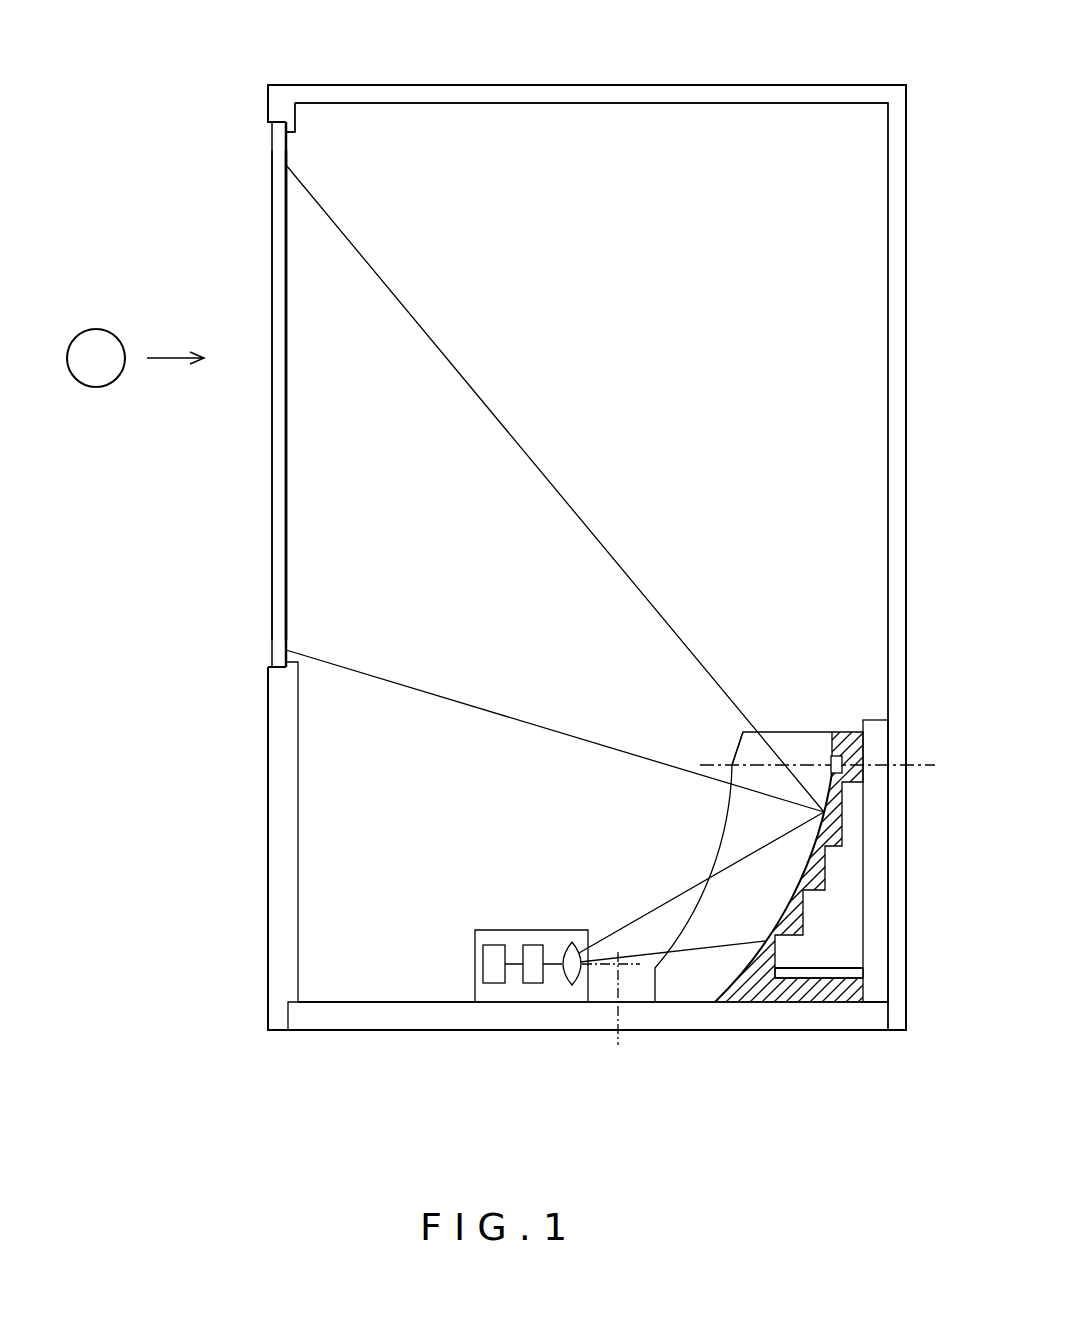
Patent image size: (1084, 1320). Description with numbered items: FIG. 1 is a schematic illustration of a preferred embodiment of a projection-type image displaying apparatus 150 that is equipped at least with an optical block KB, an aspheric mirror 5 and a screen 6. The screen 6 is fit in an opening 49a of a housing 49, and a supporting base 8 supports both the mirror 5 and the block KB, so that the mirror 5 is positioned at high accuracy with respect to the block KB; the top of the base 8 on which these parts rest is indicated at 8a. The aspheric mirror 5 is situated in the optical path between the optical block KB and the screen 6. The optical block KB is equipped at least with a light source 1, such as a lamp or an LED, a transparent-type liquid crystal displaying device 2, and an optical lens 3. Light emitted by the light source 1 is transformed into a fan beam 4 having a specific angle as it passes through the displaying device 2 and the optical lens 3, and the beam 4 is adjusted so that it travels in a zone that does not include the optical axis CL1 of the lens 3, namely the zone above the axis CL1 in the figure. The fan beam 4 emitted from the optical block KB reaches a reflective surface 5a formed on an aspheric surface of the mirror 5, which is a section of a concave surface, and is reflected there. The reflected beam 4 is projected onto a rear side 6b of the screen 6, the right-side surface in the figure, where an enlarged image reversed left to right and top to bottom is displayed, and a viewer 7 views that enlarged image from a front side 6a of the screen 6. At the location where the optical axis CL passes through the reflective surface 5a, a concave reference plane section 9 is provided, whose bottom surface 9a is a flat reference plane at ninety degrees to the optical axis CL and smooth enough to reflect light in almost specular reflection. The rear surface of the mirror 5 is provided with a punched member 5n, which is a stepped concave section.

The projection-type image displaying apparatus 150 is at (806, 27).
The housing 49 is at (551, 85).
The opening 49a is at (297, 133).
The screen 6 is at (272, 236).
The front side 6a is at (272, 516).
The rear side 6b is at (290, 516).
The viewer 7 is at (97, 330).
The supporting base 8 is at (368, 1030).
The base plate upper surface 8a is at (338, 1002).
The optical block KB is at (497, 930).
The light source 1 is at (493, 983).
The transparent-type liquid crystal displaying device 2 is at (536, 983).
The optical lens 3 is at (572, 985).
The optical axis CL1 is at (619, 1026).
The fan beam 4 is at (642, 915).
The concave reference plane section 9 is at (801, 744).
The bottom surface 9a is at (832, 756).
The optical axis CL is at (712, 760).
The aspheric mirror 5 is at (848, 732).
The reflective surface 5a is at (802, 872).
The punched member 5n is at (807, 910).